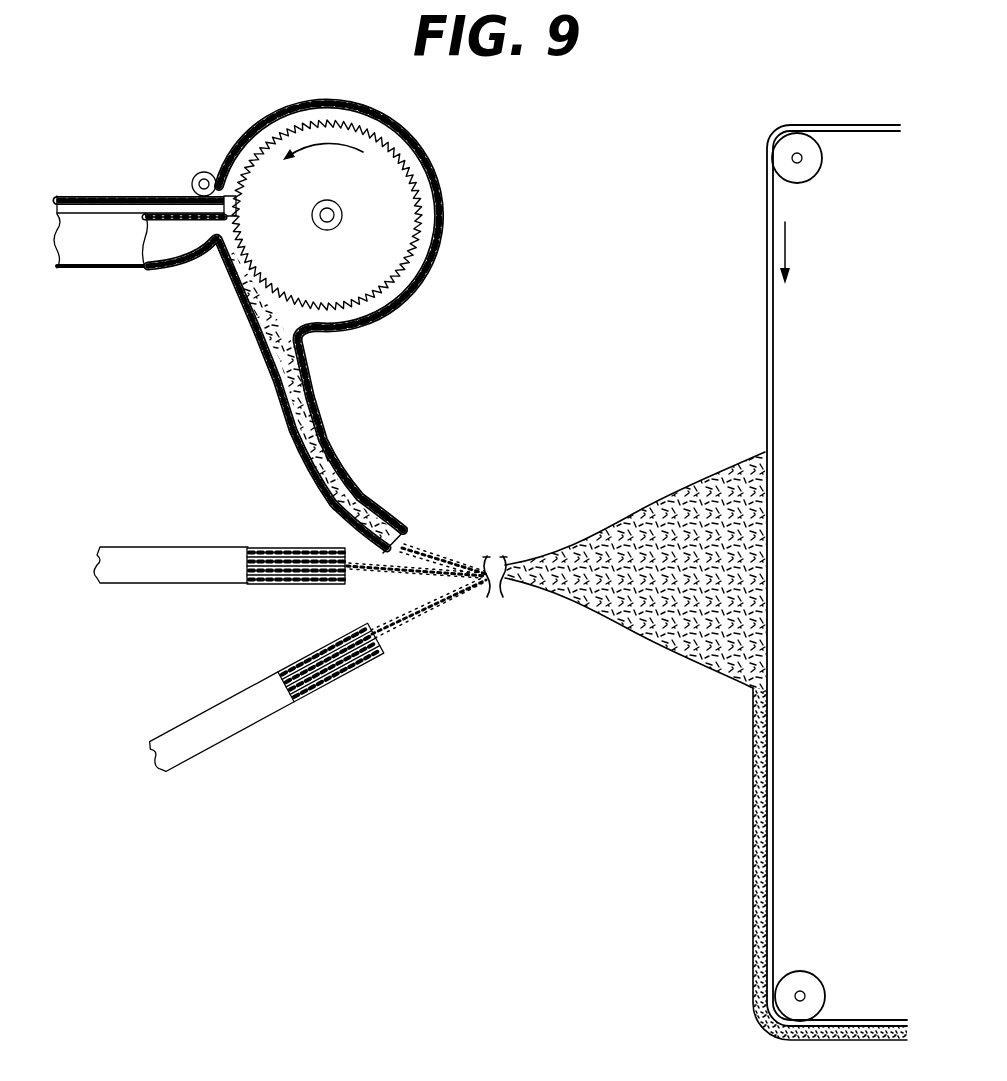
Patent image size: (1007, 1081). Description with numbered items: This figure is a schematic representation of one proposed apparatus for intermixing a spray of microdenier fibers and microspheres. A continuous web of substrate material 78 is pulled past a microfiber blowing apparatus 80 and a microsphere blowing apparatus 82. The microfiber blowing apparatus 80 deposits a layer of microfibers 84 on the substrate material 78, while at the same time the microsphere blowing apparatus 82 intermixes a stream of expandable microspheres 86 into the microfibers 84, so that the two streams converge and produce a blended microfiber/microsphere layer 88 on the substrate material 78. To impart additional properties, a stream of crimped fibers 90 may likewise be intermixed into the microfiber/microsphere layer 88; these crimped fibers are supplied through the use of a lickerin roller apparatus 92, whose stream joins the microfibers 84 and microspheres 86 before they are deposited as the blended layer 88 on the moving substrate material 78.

The continuous web of substrate material 78 is at (775, 330).
The microfiber blowing apparatus 80 is at (284, 548).
The microsphere blowing apparatus 82 is at (355, 667).
The layer of microfibers 84 is at (383, 572).
The stream of expandable microspheres 86 is at (437, 607).
The blended microfiber/microsphere layer 88 is at (752, 766).
The stream of crimped fibers 90 is at (424, 560).
The lickerin roller apparatus 92 is at (462, 210).